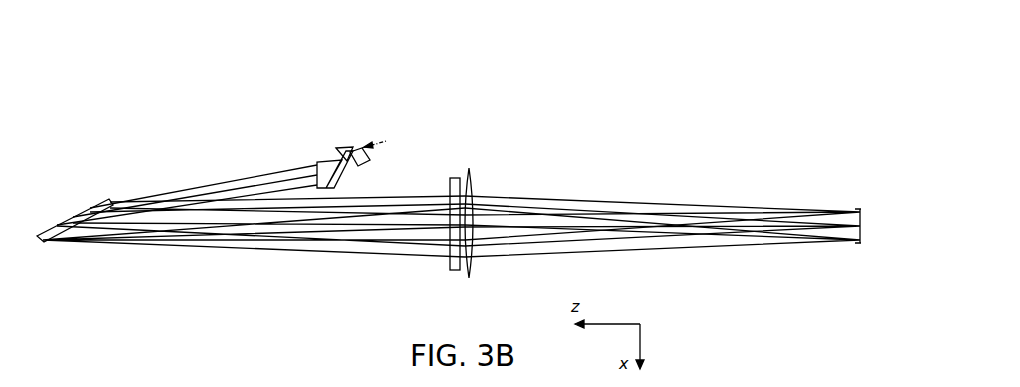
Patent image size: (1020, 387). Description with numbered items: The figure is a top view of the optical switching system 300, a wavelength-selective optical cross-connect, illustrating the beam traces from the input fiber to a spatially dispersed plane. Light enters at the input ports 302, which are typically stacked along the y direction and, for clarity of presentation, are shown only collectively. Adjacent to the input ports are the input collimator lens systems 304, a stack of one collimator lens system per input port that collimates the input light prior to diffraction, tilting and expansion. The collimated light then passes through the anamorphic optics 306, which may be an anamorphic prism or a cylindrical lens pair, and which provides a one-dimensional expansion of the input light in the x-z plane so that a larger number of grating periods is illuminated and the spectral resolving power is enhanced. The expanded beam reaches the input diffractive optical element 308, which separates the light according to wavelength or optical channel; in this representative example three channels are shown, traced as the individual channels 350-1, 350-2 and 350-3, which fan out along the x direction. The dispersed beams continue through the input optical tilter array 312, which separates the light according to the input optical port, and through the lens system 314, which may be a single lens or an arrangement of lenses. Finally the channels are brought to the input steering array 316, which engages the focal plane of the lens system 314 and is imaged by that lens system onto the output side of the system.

The optical switching system 300 is at (192, 81).
The input ports 302 is at (394, 149).
The input collimator lens systems 304 is at (363, 139).
The anamorphic optics 306 is at (325, 152).
The input diffractive optical element 308 is at (75, 215).
The input optical tilter array 312 is at (435, 234).
The lens system 314 is at (485, 229).
The input steering array 316 is at (876, 226).
The first optical channel 350-1 is at (767, 211).
The second optical channel 350-2 is at (833, 224).
The third optical channel 350-3 is at (818, 240).